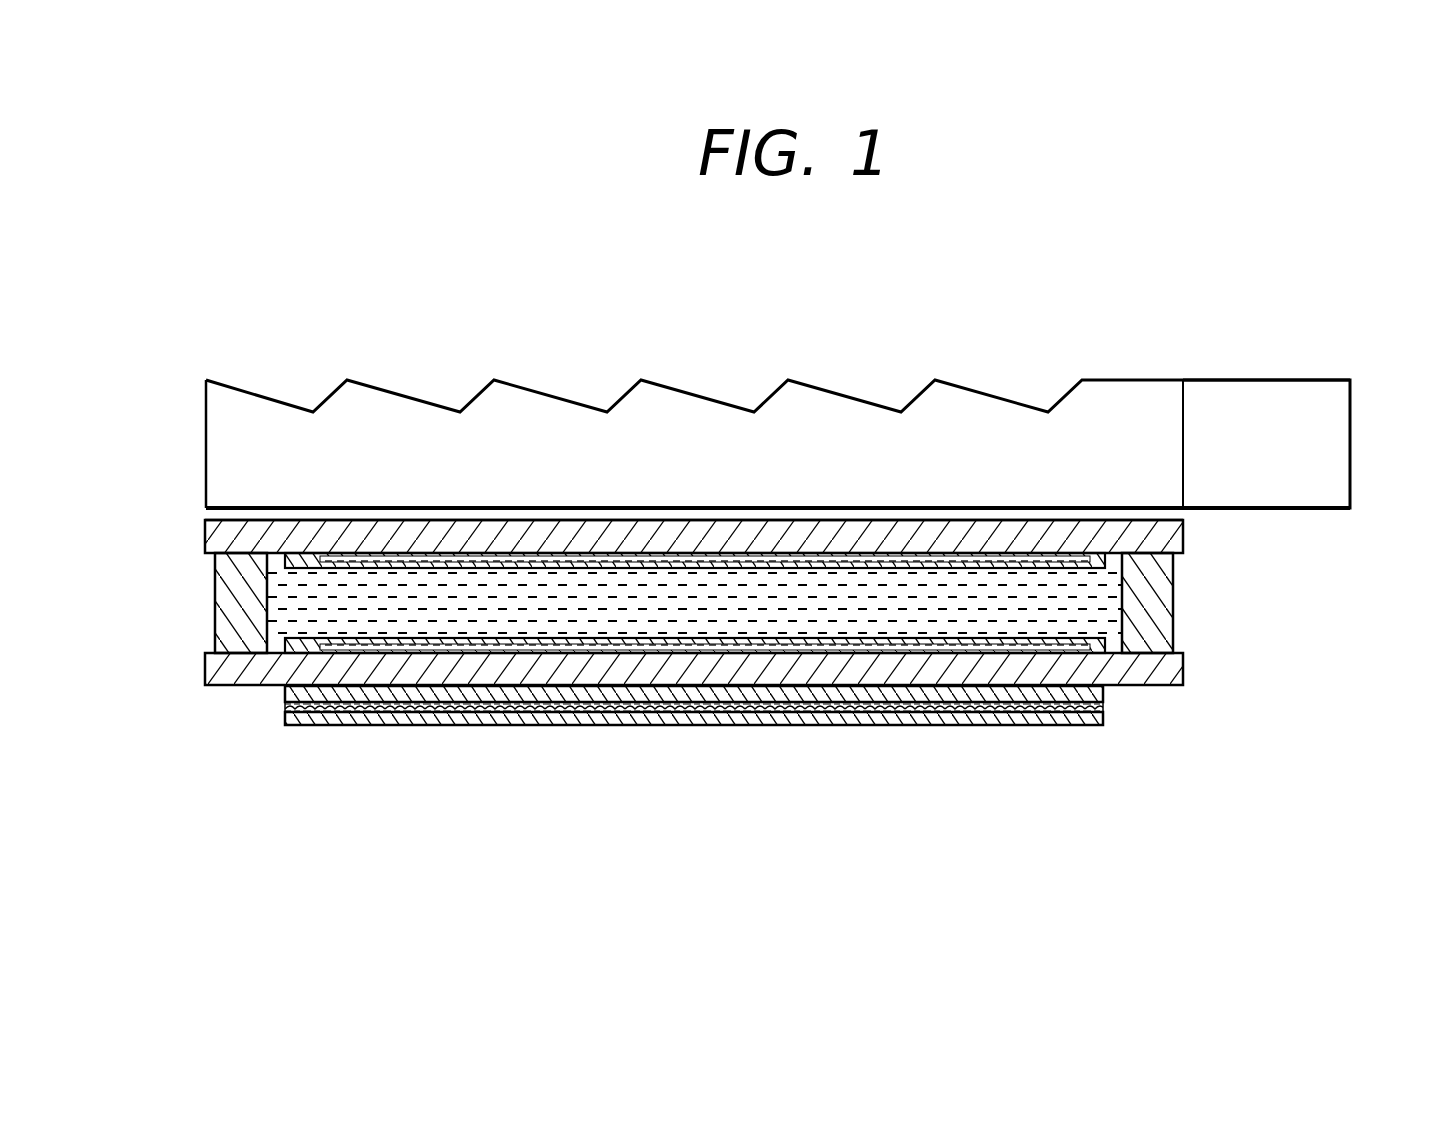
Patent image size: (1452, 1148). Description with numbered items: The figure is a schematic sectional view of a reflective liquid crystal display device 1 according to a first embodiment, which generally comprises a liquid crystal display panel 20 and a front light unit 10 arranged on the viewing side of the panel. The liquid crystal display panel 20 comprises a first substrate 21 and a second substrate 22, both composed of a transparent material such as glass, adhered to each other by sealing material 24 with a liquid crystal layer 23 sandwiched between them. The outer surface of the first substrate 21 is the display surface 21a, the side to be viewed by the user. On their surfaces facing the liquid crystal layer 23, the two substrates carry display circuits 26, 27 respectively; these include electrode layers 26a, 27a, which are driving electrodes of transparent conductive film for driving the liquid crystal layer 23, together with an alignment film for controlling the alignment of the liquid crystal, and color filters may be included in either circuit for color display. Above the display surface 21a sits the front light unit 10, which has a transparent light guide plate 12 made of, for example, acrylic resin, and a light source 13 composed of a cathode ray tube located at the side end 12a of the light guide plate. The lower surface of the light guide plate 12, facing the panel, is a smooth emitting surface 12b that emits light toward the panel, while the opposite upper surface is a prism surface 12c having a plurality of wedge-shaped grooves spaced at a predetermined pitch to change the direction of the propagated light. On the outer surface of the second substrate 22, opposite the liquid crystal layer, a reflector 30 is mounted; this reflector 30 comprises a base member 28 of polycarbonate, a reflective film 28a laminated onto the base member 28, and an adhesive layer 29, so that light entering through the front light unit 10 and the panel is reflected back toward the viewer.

The liquid crystal display device 1 is at (1258, 305).
The front light unit 10 is at (1365, 428).
The light guide plate 12 is at (220, 412).
The side end 12a is at (1183, 412).
The emitting surface 12b is at (258, 505).
The prism surface 12c is at (390, 390).
The light source 13 is at (1308, 393).
The liquid crystal display panel 20 is at (1288, 537).
The first substrate 21 is at (1163, 541).
The display surface 21a is at (952, 522).
The second substrate 22 is at (1163, 672).
The liquid crystal layer 23 is at (1105, 592).
The sealing material 24 is at (1157, 628).
The display circuit 26 is at (300, 557).
The electrode layer 26a is at (300, 570).
The display circuit 27 is at (300, 638).
The electrode layer 27a is at (1085, 640).
The base member 28 is at (1012, 722).
The reflective film 28a is at (948, 710).
The adhesive layer 29 is at (918, 702).
The reflector 30 is at (882, 835).